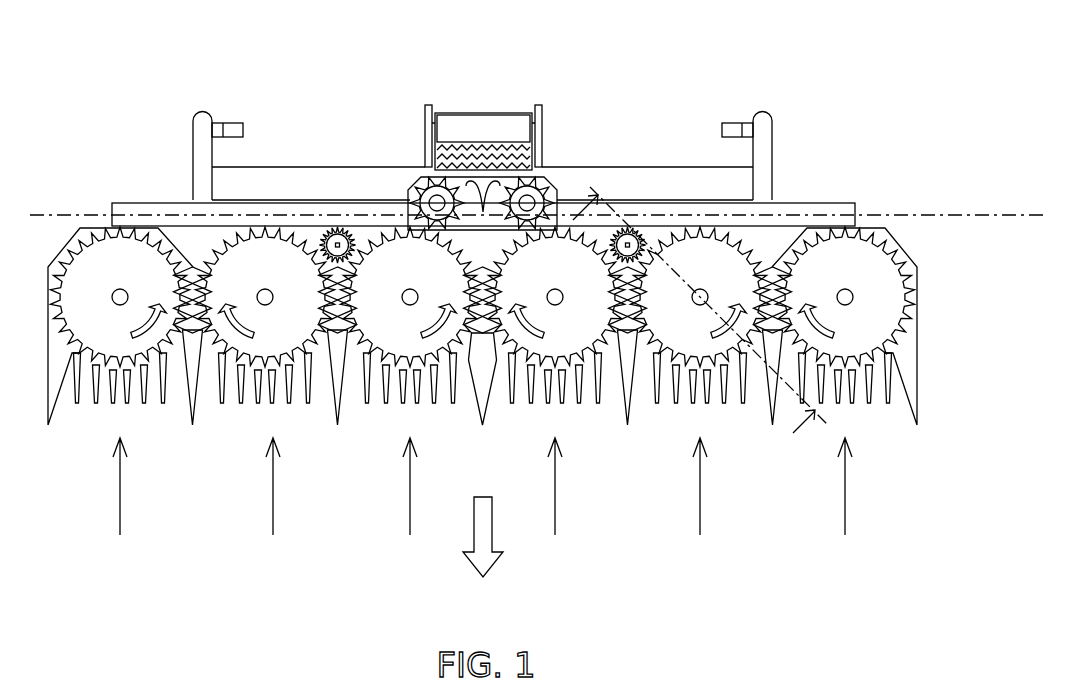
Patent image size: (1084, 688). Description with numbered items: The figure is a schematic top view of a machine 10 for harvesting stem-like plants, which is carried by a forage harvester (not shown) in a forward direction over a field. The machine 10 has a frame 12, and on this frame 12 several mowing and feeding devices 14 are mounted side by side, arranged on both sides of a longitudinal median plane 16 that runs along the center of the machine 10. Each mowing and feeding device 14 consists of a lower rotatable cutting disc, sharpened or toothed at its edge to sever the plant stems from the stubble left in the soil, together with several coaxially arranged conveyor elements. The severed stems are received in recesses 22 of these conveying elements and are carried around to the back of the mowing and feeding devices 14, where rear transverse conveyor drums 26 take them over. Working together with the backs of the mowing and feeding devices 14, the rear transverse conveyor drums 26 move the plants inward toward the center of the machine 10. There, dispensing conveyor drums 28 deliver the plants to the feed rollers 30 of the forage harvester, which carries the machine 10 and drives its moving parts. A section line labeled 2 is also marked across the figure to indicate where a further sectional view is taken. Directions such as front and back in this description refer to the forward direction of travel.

The machine for harvesting stem-like plants 10 is at (818, 69).
The frame 12 is at (903, 215).
The mowing and feeding devices 14 is at (483, 506).
The longitudinal median plane 16 is at (476, 558).
The recesses 22 is at (853, 364).
The rear transverse conveyor drums 26 is at (628, 228).
The dispensing conveyor drums 28 is at (545, 180).
The feed rollers 30 is at (436, 155).
The section line 2- 2 is at (697, 311).